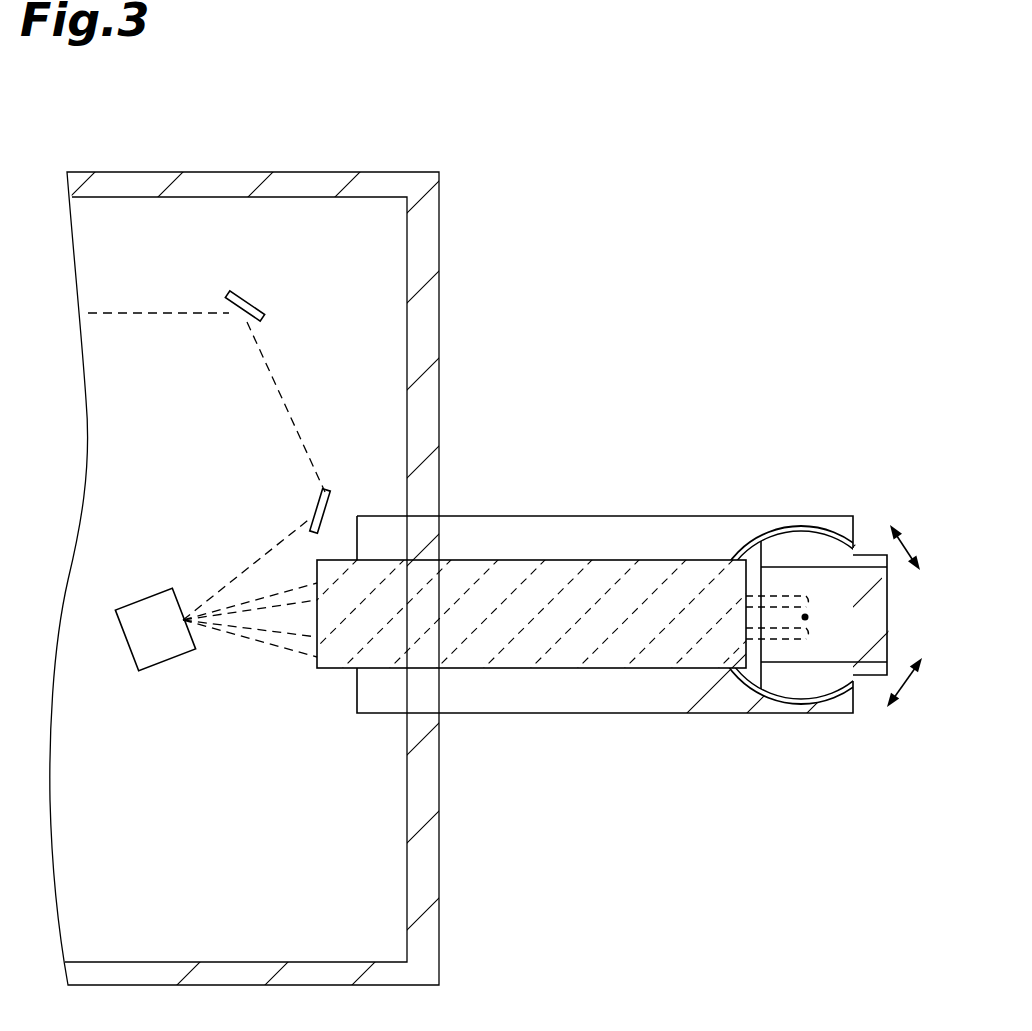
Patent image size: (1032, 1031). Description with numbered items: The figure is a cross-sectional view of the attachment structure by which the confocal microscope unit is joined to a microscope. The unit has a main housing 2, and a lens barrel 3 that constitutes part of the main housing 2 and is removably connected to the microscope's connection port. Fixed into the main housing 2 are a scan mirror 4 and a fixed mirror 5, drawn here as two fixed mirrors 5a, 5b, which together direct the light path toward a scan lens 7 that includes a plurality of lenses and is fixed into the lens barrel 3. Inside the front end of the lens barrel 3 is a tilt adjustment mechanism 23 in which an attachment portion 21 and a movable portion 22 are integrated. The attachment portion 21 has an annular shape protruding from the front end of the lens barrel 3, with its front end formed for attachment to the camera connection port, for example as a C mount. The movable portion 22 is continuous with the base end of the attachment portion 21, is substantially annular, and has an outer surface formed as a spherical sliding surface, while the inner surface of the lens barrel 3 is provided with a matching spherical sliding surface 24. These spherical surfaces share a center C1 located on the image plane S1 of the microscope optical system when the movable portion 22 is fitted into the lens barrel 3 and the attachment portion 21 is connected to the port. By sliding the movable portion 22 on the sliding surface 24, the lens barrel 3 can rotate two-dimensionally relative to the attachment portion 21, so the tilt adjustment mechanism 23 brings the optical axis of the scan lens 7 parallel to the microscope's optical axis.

The main housing 2 is at (380, 172).
The lens barrel 3 is at (587, 516).
The scan mirror 4 is at (167, 663).
The fixed mirror 5 is at (311, 390).
The fixed mirror 5a is at (244, 300).
The fixed mirror 5b is at (324, 490).
The scan lens 7 is at (575, 657).
The attachment portion 21 is at (938, 500).
The movable portion 22 is at (788, 552).
The tilt adjustment mechanism 23 is at (896, 500).
The spherical sliding surface 24 is at (748, 684).
The center of spherical surface C1 is at (808, 620).
The image plane S1 is at (806, 604).